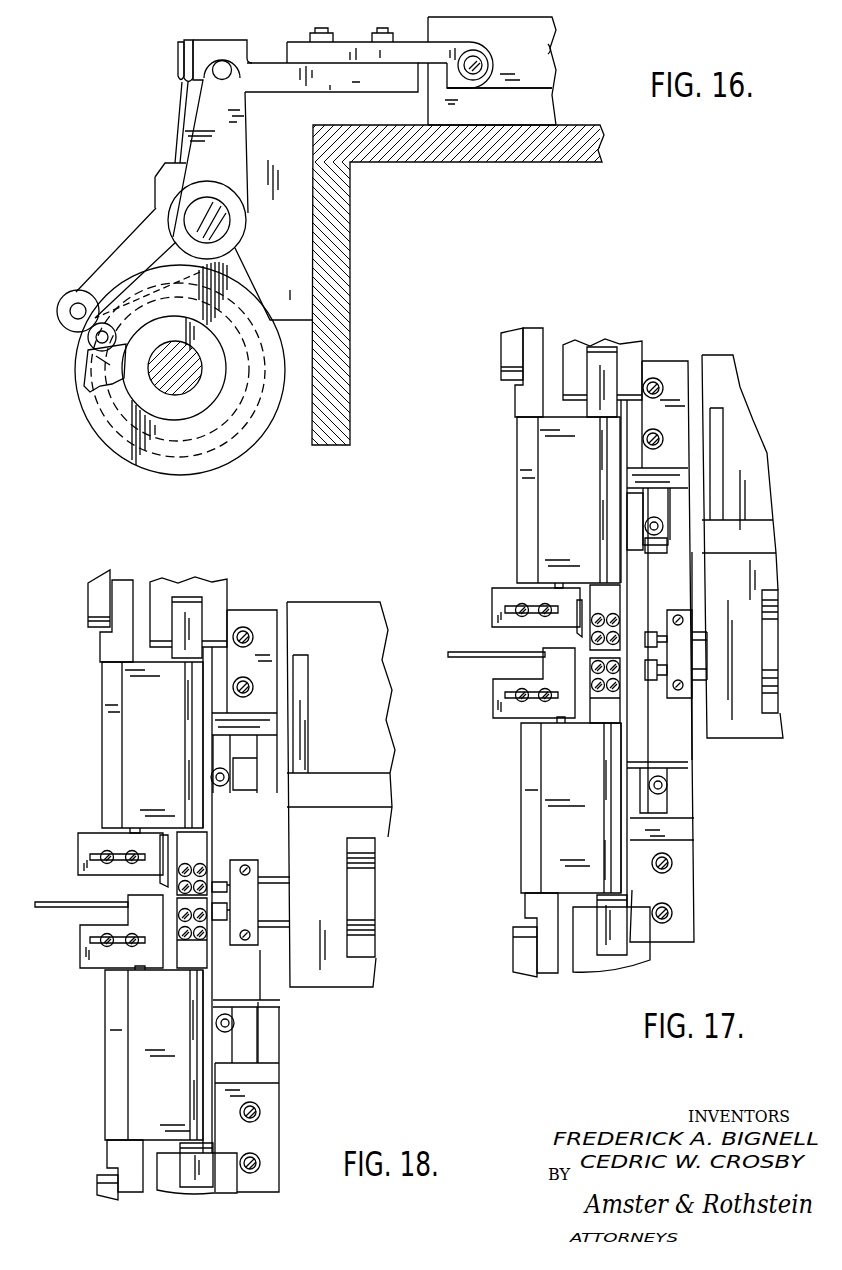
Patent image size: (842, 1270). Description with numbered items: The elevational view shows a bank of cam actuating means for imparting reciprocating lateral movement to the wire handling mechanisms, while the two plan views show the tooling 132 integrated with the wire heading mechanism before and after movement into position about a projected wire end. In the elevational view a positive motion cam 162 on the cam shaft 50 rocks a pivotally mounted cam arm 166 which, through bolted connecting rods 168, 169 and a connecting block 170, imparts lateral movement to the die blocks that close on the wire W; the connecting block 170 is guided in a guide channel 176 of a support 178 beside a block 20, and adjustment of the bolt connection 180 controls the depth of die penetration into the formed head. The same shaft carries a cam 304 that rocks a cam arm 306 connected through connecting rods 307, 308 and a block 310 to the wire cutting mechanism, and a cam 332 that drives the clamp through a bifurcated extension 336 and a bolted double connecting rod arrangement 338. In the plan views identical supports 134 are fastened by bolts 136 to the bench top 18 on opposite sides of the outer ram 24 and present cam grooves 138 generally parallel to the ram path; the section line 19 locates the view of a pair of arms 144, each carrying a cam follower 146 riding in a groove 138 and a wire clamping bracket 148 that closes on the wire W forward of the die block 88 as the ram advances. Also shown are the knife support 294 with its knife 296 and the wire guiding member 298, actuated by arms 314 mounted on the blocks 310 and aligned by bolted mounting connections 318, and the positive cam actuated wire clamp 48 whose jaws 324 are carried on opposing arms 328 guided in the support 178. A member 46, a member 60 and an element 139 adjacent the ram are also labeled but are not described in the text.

In FIG. 16, the bench top 18 is at (597, 137).
In FIG. 17, the section line 19- 19 is at (616, 323).
In FIG. 16, the support block 20 is at (293, 250).
In FIG. 17, the outer ram 24 is at (703, 649).
In FIG. 18, the outer ram 24 is at (284, 894).
In FIG. 17, the plate 46 is at (745, 603).
In FIG. 17, the positive cam actuated wire clamp 48 is at (627, 658).
In FIG. 16, the cam shaft 50 is at (197, 372).
In FIG. 17, the guide block 60 is at (777, 655).
In FIG. 18, the guide block 60 is at (369, 896).
In FIG. 17, the die block 88 is at (670, 614).
In FIG. 18, the die block 88 is at (216, 886).
In FIG. 17, the tooling 132 is at (704, 338).
In FIG. 18, the tooling 132 is at (285, 578).
In FIG. 17, the supports 134 is at (672, 407).
In FIG. 18, the supports 134 is at (275, 1154).
In FIG. 17, the bolts 136 is at (655, 377).
In FIG. 18, the bolts 136 is at (262, 1112).
In FIG. 17, the cam grooves 138 is at (640, 770).
In FIG. 18, the cam grooves 138 is at (244, 760).
In FIG. 17, the pivot pin 139 is at (635, 518).
In FIG. 17, the arms 144 is at (657, 554).
In FIG. 17, the cam follower 146 is at (656, 517).
In FIG. 18, the cam follower 146 is at (211, 778).
In FIG. 17, the wire clamping bracket 148 is at (650, 634).
In FIG. 18, the wire clamping bracket 148 is at (219, 931).
In FIG. 16, the positive motion cams 162 is at (85, 418).
In FIG. 16, the cam arms 166 is at (230, 143).
In FIG. 16, the connecting rod 168 is at (312, 87).
In FIG. 16, the connecting rod 169 is at (398, 53).
In FIG. 16, the connecting block 170 is at (543, 70).
In FIG. 16, the guide channel 176 is at (547, 47).
In FIG. 16, the support 178 is at (548, 107).
In FIG. 17, the support 178 is at (582, 496).
In FIG. 18, the support 178 is at (158, 743).
In FIG. 16, the bolt connection 180 is at (380, 32).
In FIG. 17, the knife support 294 is at (503, 598).
In FIG. 18, the knife support 294 is at (80, 848).
In FIG. 17, the knife 296 is at (577, 633).
In FIG. 18, the knife 296 is at (165, 840).
In FIG. 17, the wire guiding member 298 is at (500, 713).
In FIG. 18, the wire guiding member 298 is at (80, 963).
In FIG. 16, the cam 304 is at (82, 365).
In FIG. 16, the cam arm 306 is at (183, 97).
In FIG. 16, the connecting rod 307 is at (178, 63).
In FIG. 17, the connecting rod 308 is at (507, 347).
In FIG. 18, the connecting rod 308 is at (88, 598).
In FIG. 17, the block 310 is at (522, 397).
In FIG. 18, the block 310 is at (110, 648).
In FIG. 17, the actuating arms 314 is at (564, 586).
In FIG. 18, the actuating arms 314 is at (137, 832).
In FIG. 16, the bolted mounting connections 318 is at (184, 52).
In FIG. 17, the jaws 324 is at (610, 605).
In FIG. 18, the jaws 324 is at (189, 862).
In FIG. 17, the opposing arms 328 is at (600, 362).
In FIG. 18, the opposing arms 328 is at (186, 608).
In FIG. 16, the cam 332 is at (86, 381).
In FIG. 16, the bifurcated extension 336 is at (187, 117).
In FIG. 17, the bolted double connecting rod arrangement 338 is at (641, 340).
In FIG. 18, the bolted double connecting rod arrangement 338 is at (222, 590).
In FIG. 17, the wire W is at (457, 653).
In FIG. 18, the wire W is at (42, 902).